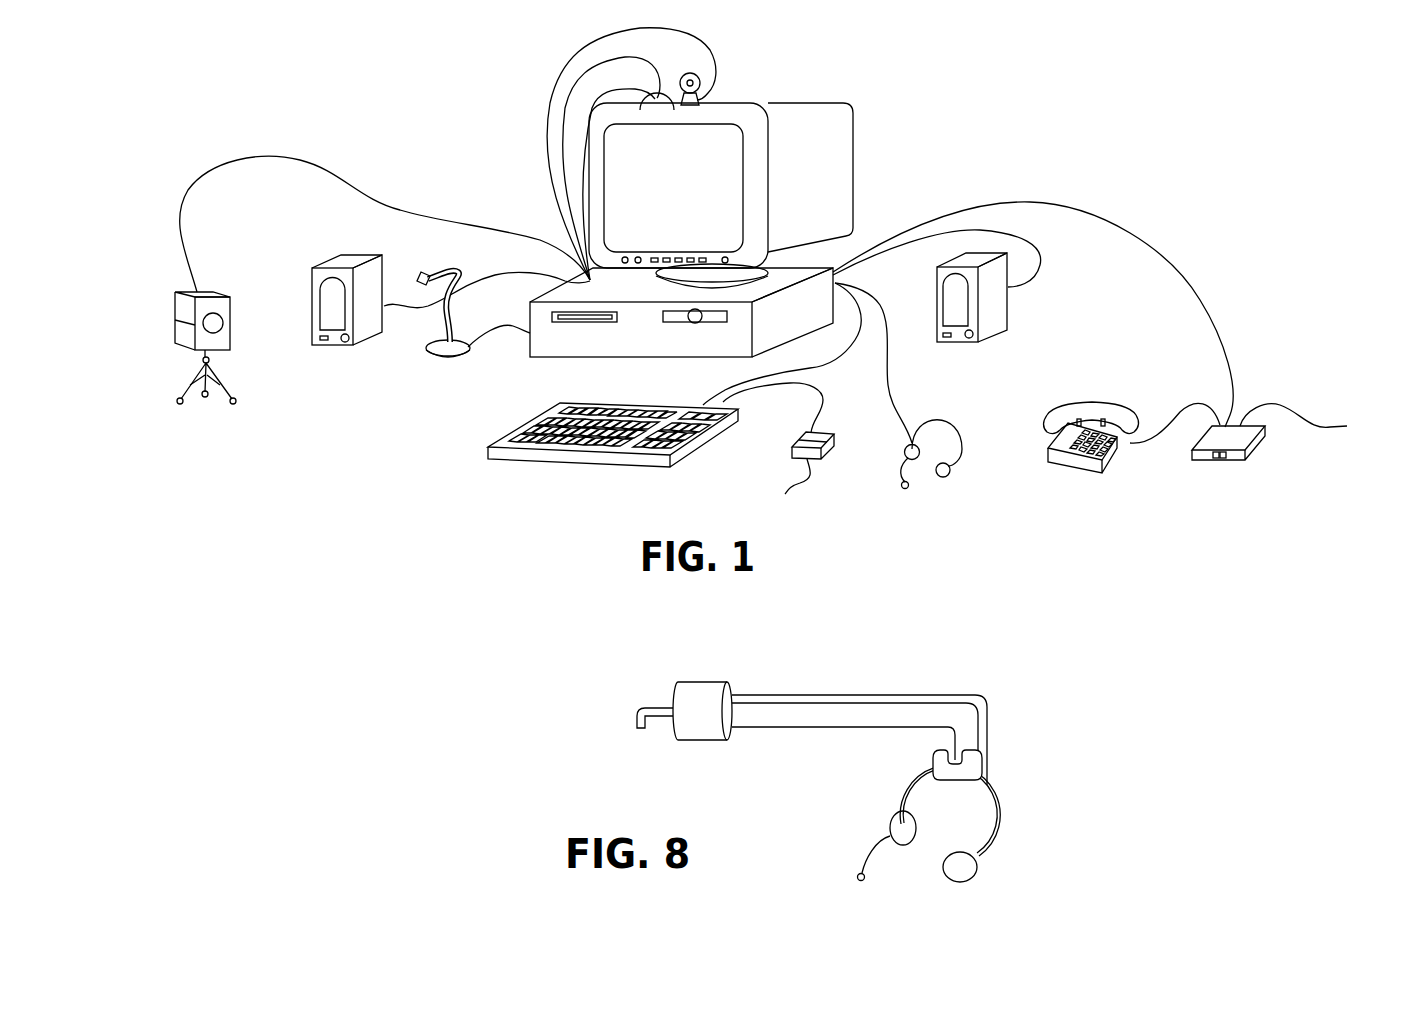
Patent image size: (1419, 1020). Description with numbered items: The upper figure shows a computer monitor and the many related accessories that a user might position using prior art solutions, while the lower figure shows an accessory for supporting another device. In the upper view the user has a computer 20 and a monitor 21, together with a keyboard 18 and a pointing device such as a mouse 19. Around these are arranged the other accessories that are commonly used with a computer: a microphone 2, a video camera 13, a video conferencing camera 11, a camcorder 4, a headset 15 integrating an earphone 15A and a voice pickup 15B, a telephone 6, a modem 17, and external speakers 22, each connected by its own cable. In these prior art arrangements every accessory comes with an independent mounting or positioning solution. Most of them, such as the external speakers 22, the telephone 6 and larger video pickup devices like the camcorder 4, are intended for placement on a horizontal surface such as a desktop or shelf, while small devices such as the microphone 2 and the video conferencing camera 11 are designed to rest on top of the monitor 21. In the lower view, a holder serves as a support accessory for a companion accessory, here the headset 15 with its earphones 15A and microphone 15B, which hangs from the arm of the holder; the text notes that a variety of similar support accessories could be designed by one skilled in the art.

In FIG. 1, the microphone 2 is at (580, 88).
In FIG. 1, the video conferencing camera 11 is at (703, 76).
In FIG. 1, the monitor 21 is at (855, 122).
In FIG. 1, the computer 20 is at (838, 266).
In FIG. 1, the camcorder 4 is at (222, 292).
In FIG. 1, the video camera 13 is at (427, 352).
In FIG. 1, the keyboard 18 is at (613, 465).
In FIG. 8, the keyboard 18 is at (820, 695).
In FIG. 1, the mouse 19 is at (803, 479).
In FIG. 1, the headset 15 is at (933, 491).
In FIG. 8, the headset 15 is at (929, 842).
In FIG. 1, the earphone 15A is at (943, 478).
In FIG. 8, the earphone 15A is at (890, 820).
In FIG. 1, the voice pickup 15B is at (903, 490).
In FIG. 8, the voice pickup 15B is at (857, 877).
In FIG. 1, the telephone 6 is at (1107, 458).
In FIG. 1, the external speakers 22 is at (1010, 300).
In FIG. 1, the modem 17 is at (1255, 450).